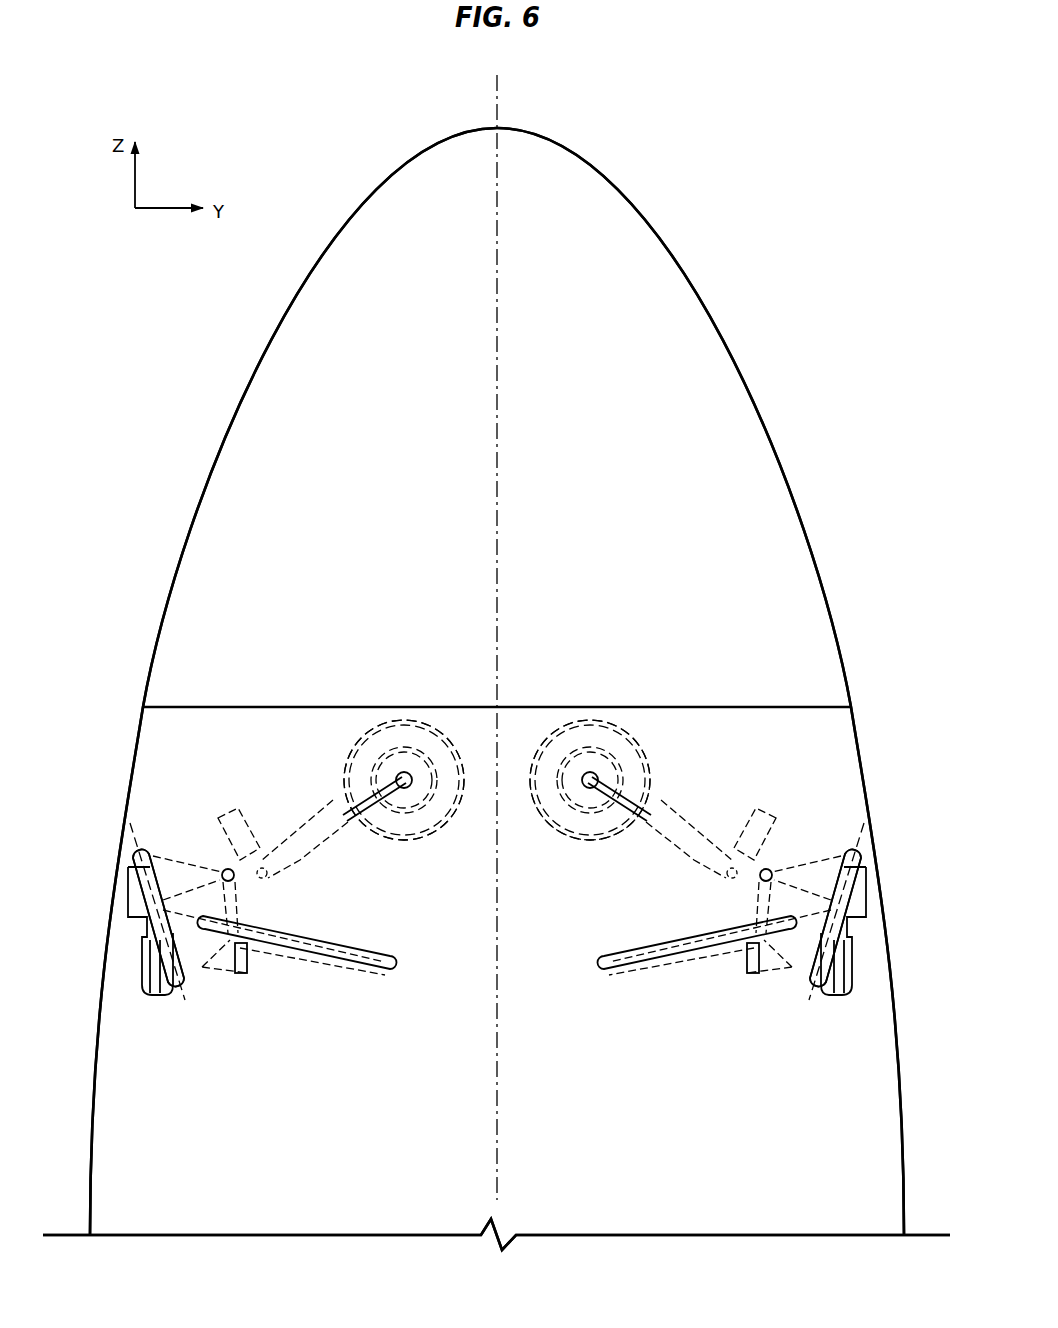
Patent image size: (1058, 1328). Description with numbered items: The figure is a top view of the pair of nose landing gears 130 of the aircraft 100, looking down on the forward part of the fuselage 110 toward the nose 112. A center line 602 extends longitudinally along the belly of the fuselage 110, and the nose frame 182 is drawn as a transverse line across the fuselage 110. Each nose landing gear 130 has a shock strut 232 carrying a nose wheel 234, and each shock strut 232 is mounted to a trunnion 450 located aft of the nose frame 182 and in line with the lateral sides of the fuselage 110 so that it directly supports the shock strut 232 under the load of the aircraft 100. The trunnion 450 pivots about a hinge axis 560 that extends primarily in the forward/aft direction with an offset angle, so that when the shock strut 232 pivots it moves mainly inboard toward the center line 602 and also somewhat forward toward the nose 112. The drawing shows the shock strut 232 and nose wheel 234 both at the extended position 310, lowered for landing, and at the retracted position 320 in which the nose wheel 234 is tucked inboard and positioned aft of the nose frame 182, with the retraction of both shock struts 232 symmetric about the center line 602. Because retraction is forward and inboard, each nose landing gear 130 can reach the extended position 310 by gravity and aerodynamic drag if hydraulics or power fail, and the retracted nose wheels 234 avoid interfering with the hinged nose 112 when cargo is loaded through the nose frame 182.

The aircraft 100 is at (834, 194).
The fuselage 110 is at (905, 1062).
The nose 112 is at (228, 437).
The nose landing gear 130 is at (322, 1036).
The nose frame 182 is at (772, 707).
The shock strut 232 is at (276, 879).
The nose wheel 234 is at (352, 757).
The extended position 310 is at (163, 1040).
The retracted position 320 is at (392, 704).
The trunnion 450 is at (187, 971).
The hinge axis 560 is at (188, 1013).
The center line 602 is at (499, 369).